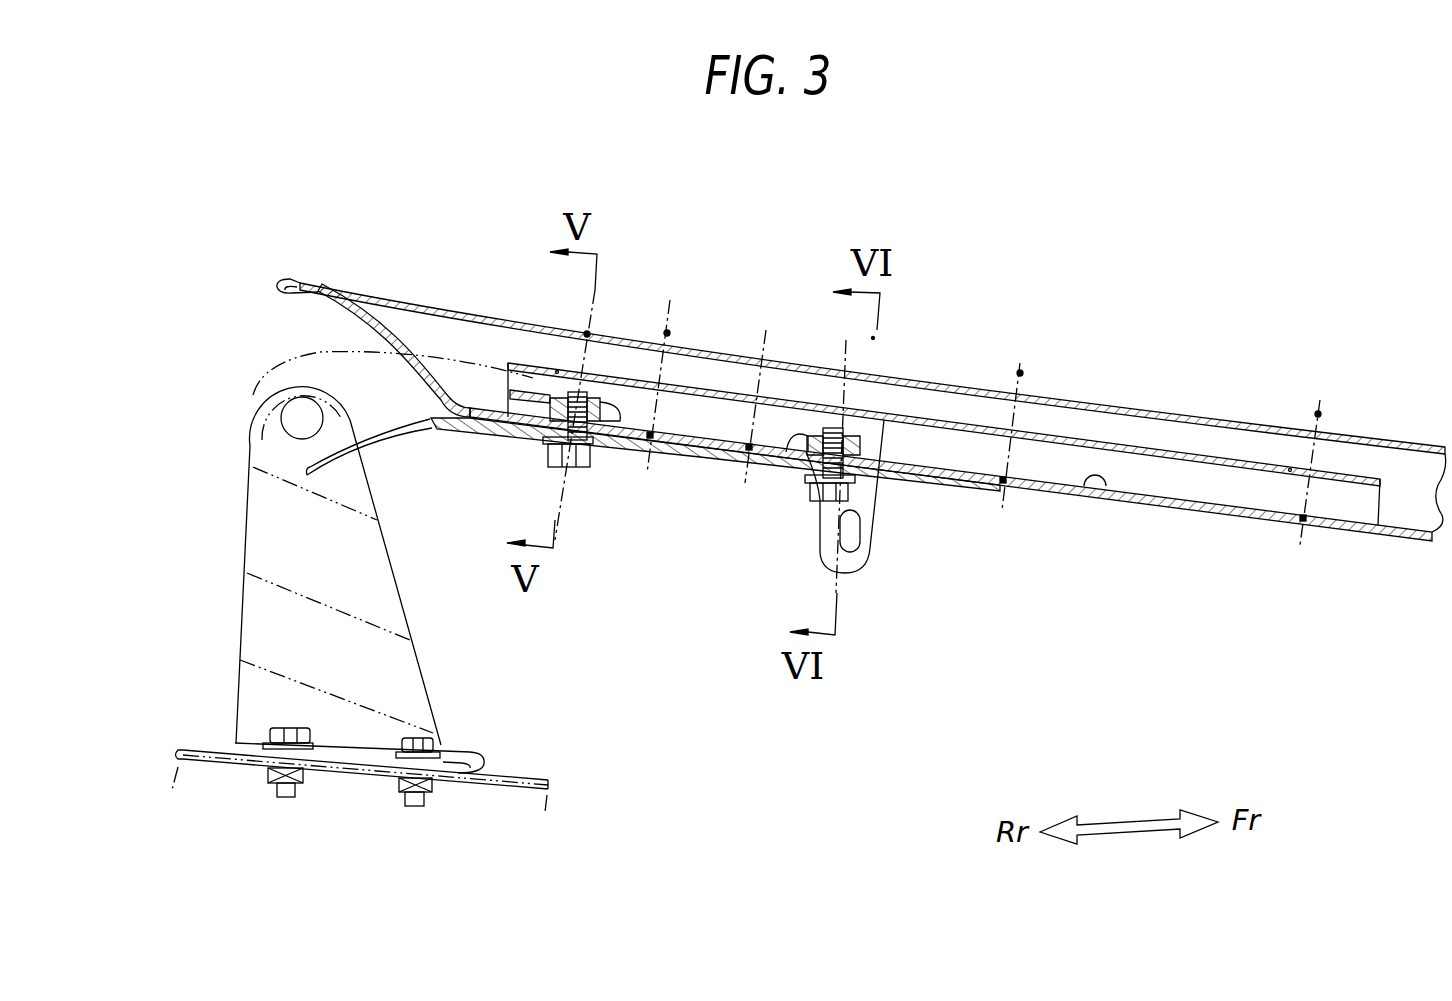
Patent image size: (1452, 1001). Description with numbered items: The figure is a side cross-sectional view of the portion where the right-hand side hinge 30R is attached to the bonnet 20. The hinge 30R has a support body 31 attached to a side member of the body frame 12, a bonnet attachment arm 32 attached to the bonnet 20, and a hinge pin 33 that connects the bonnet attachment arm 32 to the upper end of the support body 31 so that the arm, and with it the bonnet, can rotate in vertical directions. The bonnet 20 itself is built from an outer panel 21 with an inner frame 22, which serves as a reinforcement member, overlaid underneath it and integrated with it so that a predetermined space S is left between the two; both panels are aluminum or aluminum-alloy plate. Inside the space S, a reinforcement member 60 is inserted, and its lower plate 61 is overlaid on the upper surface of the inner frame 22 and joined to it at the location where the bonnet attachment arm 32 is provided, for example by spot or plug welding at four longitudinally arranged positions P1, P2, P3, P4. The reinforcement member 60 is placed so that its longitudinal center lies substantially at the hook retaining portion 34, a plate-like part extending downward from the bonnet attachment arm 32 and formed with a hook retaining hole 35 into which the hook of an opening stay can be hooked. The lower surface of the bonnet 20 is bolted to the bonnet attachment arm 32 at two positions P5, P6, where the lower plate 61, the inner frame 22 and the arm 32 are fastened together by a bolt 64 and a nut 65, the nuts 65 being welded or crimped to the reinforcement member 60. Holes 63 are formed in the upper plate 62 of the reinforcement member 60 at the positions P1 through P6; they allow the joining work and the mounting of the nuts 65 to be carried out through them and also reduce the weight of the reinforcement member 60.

The body frame 12 is at (528, 778).
The bonnet 20 is at (864, 451).
The outer panel 21 is at (1407, 441).
The inner frame 22 is at (1378, 536).
The right-hand side hinge 30R is at (564, 528).
The support body 31 is at (249, 505).
The bonnet attachment arm 32 is at (478, 432).
The hinge pin 33 is at (281, 406).
The hook retaining portion 34 is at (896, 555).
The hook retaining hole 35 is at (855, 550).
The reinforcement member 60 is at (944, 370).
The lower plate 61 is at (1101, 490).
The upper plate 62 is at (1118, 447).
The holes 63 is at (557, 372).
The bolt 64 is at (590, 472).
The nut 65 is at (612, 425).
The position P1 is at (667, 333).
The position P2 is at (763, 343).
The position P3 is at (1052, 360).
The position P4 is at (1318, 414).
The position P5 is at (587, 333).
The position P6 is at (845, 343).
The space S is at (1413, 507).